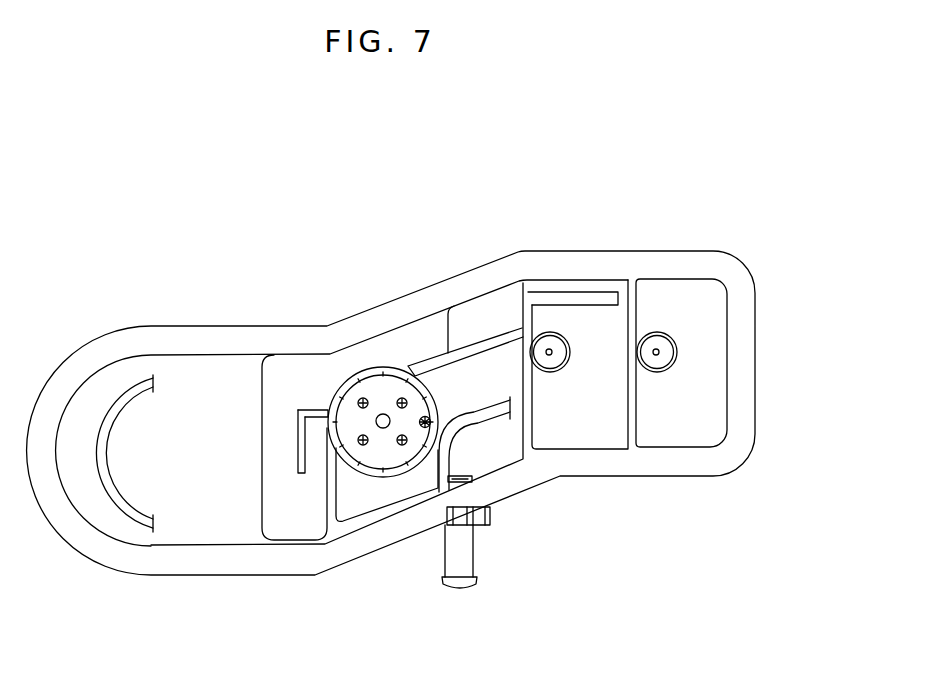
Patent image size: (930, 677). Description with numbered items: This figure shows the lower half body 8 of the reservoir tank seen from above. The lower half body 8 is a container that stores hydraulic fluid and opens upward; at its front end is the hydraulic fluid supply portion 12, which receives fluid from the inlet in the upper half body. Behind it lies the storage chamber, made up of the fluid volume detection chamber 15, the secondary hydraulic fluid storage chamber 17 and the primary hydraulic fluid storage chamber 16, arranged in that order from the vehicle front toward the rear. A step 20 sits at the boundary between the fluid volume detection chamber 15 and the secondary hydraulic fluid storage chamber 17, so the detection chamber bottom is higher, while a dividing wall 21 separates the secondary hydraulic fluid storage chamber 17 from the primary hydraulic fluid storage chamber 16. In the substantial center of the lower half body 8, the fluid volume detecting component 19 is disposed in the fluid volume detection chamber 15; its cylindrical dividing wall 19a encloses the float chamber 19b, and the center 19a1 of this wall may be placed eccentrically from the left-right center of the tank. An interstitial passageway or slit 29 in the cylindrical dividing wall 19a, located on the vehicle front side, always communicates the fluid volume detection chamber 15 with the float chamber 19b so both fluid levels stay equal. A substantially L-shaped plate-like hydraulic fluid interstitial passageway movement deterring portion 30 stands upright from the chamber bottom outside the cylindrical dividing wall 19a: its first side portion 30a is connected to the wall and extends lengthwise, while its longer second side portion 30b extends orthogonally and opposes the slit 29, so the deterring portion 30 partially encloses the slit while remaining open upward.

The lower half body 8 is at (568, 248).
The hydraulic fluid supply portion 12 is at (183, 533).
The fluid volume detection chamber 15 is at (275, 478).
The primary hydraulic fluid storage chamber 16 is at (667, 415).
The secondary hydraulic fluid storage chamber 17 is at (567, 415).
The fluid volume detecting component 19 is at (394, 360).
The cylindrical dividing wall 19a is at (390, 355).
The center of the cylindrical dividing wall 19a1 is at (376, 422).
The float chamber 19b is at (372, 455).
The step 20 is at (532, 418).
The dividing wall 21 is at (633, 410).
The interstitial passageway (slit) 29 is at (328, 414).
The hydraulic fluid interstitial passageway movement deterring portion 30 is at (242, 437).
The first side portion 30a is at (306, 399).
The second side portion 30b is at (298, 449).